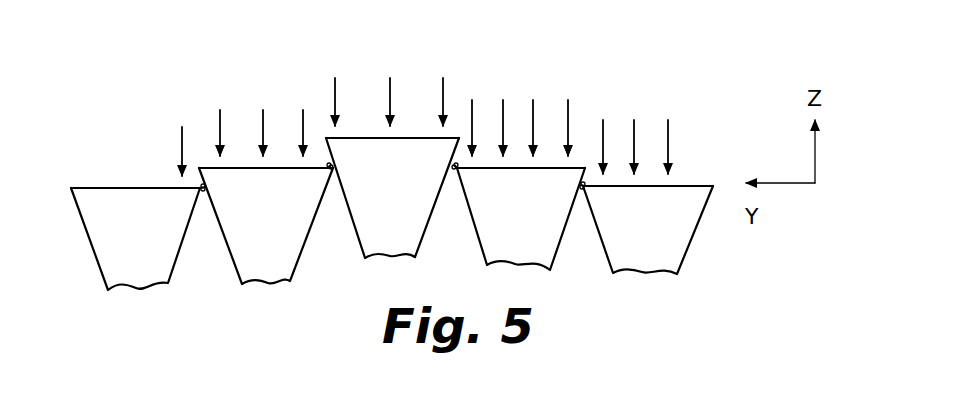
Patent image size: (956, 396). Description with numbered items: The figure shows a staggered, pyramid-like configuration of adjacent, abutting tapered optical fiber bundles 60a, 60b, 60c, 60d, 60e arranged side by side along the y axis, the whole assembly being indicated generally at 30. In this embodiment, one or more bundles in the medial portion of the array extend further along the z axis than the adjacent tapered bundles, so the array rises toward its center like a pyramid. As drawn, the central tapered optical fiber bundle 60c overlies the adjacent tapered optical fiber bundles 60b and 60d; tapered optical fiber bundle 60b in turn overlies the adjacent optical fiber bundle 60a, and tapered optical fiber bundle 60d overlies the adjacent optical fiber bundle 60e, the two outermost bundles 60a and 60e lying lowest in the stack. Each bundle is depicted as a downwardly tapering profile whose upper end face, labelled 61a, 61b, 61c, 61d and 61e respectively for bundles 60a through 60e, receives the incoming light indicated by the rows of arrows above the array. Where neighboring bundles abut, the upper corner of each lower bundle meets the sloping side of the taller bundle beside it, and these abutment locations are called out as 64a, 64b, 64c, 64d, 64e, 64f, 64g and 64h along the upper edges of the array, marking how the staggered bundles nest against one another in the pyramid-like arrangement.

The substrate structure 30 is at (309, 91).
The optical fiber bundle 60a is at (135, 223).
The tapered optical fiber bundle 60b is at (264, 188).
The central tapered optical fiber bundle 60c is at (388, 188).
The tapered optical fiber bundle 60d is at (533, 188).
The optical fiber bundle 60e is at (673, 223).
The top surface of first element 61a is at (100, 188).
The top surface of second element 61b is at (250, 168).
The top surface of third element 61c is at (362, 138).
The top surface of fourth element 61d is at (545, 168).
The top surface of fifth element 61e is at (692, 186).
The edge junction 64a is at (204, 191).
The edge junction 64b is at (205, 184).
The edge junction 64c is at (332, 170).
The edge junction 64d is at (328, 165).
The edge junction 64e is at (456, 165).
The edge junction 64f is at (453, 170).
The edge junction 64g is at (583, 184).
The edge junction 64h is at (582, 190).